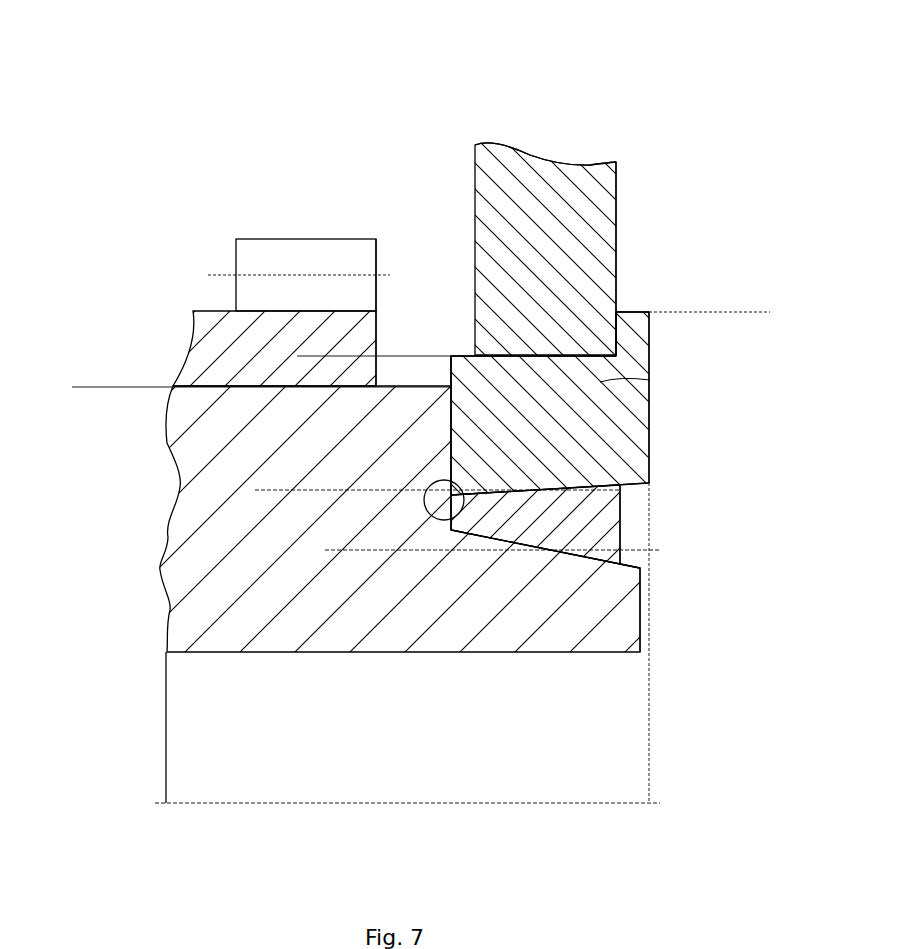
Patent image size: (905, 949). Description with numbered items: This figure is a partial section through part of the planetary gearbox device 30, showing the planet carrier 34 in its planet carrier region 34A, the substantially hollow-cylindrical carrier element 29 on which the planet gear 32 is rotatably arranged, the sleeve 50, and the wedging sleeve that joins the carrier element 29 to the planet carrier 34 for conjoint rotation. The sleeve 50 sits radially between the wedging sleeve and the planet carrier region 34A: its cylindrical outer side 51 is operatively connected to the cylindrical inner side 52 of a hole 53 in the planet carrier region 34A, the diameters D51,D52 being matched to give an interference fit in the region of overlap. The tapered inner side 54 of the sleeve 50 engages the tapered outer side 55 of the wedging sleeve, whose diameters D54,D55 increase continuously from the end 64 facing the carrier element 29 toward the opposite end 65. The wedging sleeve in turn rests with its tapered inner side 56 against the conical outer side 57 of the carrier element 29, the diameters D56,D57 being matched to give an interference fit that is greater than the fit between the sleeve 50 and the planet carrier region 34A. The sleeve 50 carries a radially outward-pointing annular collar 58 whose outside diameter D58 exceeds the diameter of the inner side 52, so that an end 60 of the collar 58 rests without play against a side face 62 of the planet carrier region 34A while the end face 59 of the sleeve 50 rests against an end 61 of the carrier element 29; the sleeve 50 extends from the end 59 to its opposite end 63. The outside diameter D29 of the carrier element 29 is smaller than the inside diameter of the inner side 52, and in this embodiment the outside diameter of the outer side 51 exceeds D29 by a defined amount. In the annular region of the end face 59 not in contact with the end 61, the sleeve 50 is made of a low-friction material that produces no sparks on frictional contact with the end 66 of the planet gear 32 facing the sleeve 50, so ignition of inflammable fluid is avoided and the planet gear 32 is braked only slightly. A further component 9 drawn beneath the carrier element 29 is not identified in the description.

The base component 9 is at (165, 805).
The carrier element 29 is at (174, 382).
The planetary gearbox device 30 is at (541, 78).
The planet gear 32 is at (212, 308).
The planet carrier 34 is at (593, 158).
The planet carrier region 34A is at (500, 150).
The sleeve 50 is at (657, 372).
The outer side of the sleeve 51 is at (457, 352).
The inner side of the hole in the planet carrier region 52 is at (650, 380).
The hole in the planet carrier region 53 is at (657, 542).
The inner side of the sleeve 54 is at (622, 486).
The outer side of the wedging sleeve 55 is at (613, 473).
The inner side of the wedging sleeve 56 is at (588, 560).
The outer side of the carrier element 57 is at (632, 558).
The annular collar 58 is at (658, 322).
The end face of the sleeve 59 is at (441, 370).
The end of the annular collar 60 is at (612, 330).
The end of the carrier element 61 is at (457, 422).
The side face of the planet carrier region 62 is at (622, 165).
The opposite end of the sleeve 63 is at (651, 340).
The end of the wedging sleeve facing the carrier element 64 is at (446, 520).
The opposite end of the wedging sleeve 65 is at (622, 517).
The end of the planet gear 66 is at (377, 340).
The outside diameter of the carrier element D29 is at (81, 387).
The outside diameter of the annular collar D58 is at (762, 312).
The outside diameter of the sleeve outer side and inside diameter of the planet carr D51,D52 is at (330, 356).
The inside diameter of the sleeve inner side and outside diameter of the wedging sle D54,D55 is at (278, 490).
The inside diameter of the wedging sleeve inner side and outside diameter of the car D56,D57 is at (352, 550).